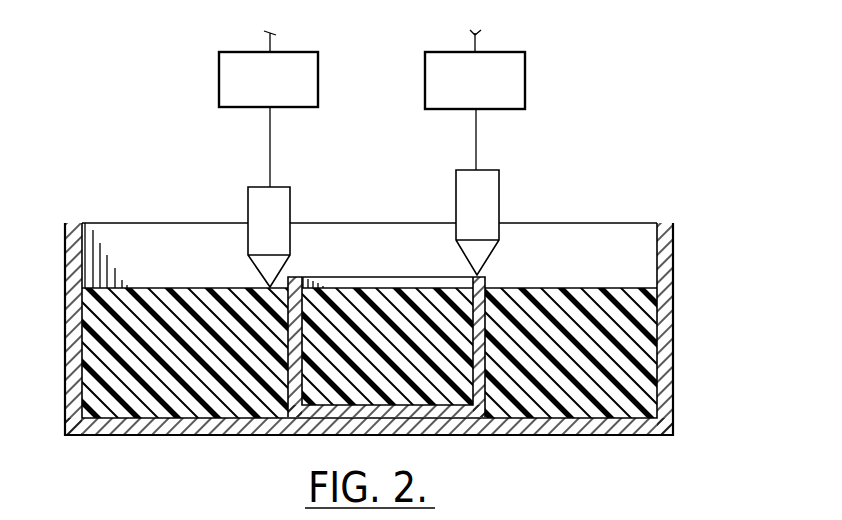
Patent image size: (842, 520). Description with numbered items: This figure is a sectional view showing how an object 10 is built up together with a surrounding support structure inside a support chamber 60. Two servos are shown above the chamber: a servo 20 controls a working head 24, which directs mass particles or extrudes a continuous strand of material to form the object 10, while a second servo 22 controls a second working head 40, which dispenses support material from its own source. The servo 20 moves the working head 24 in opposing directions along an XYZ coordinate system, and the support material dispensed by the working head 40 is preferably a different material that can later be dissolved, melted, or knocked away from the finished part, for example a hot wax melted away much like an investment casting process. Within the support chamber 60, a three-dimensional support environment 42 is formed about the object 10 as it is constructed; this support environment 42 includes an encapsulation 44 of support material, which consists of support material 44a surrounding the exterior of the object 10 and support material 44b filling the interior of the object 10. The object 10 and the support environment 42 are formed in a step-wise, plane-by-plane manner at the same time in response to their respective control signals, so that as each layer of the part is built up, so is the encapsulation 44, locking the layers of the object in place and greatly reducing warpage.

The object 10 is at (490, 287).
The servo 20 is at (527, 77).
The servo 22 is at (219, 72).
The working head 24 is at (492, 234).
The second working head 40 is at (284, 235).
The three-dimensional support environment 42 is at (152, 247).
The encapsulation 44 is at (203, 294).
The support material 44a is at (582, 294).
The support material 44b is at (386, 296).
The support chamber 60 is at (673, 300).